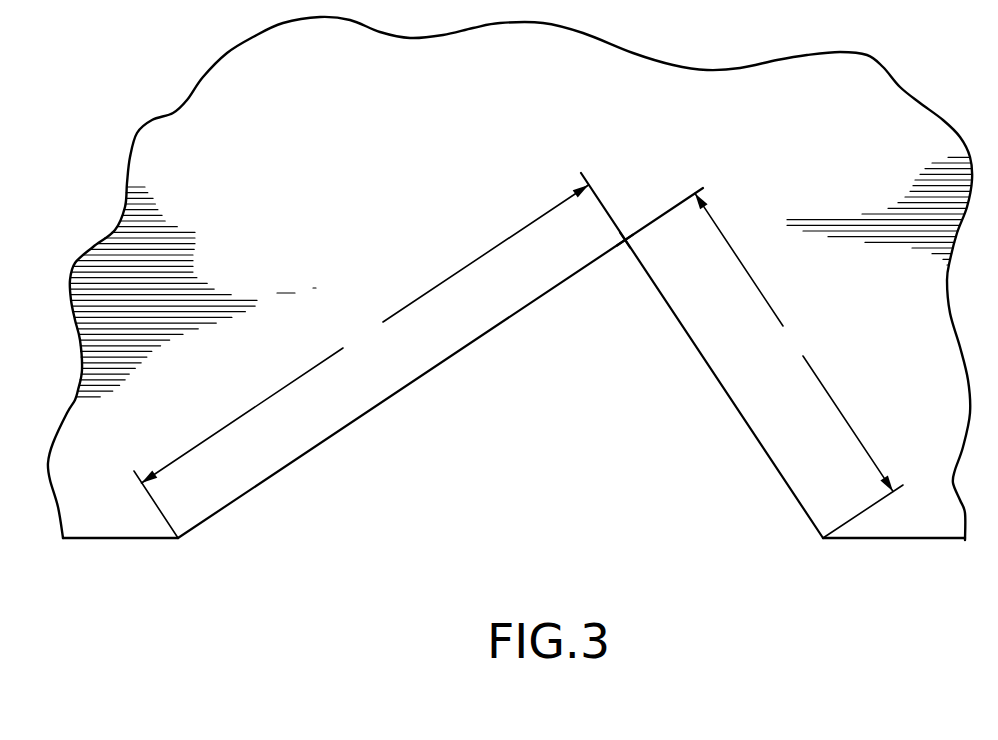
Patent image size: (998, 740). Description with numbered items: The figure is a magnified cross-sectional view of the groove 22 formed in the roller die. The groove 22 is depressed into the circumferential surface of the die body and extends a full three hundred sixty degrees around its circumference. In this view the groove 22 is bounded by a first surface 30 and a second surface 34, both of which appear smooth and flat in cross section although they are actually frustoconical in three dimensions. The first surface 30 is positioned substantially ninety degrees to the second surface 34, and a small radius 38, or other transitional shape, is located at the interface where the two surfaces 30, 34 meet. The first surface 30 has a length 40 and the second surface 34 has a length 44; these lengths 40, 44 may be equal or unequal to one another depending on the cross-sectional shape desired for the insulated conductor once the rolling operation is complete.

The groove 22 is at (468, 506).
The first surface 30 is at (437, 382).
The second surface 34 is at (712, 401).
The small radius 38 is at (625, 243).
The length 40 is at (361, 361).
The length 44 is at (799, 365).